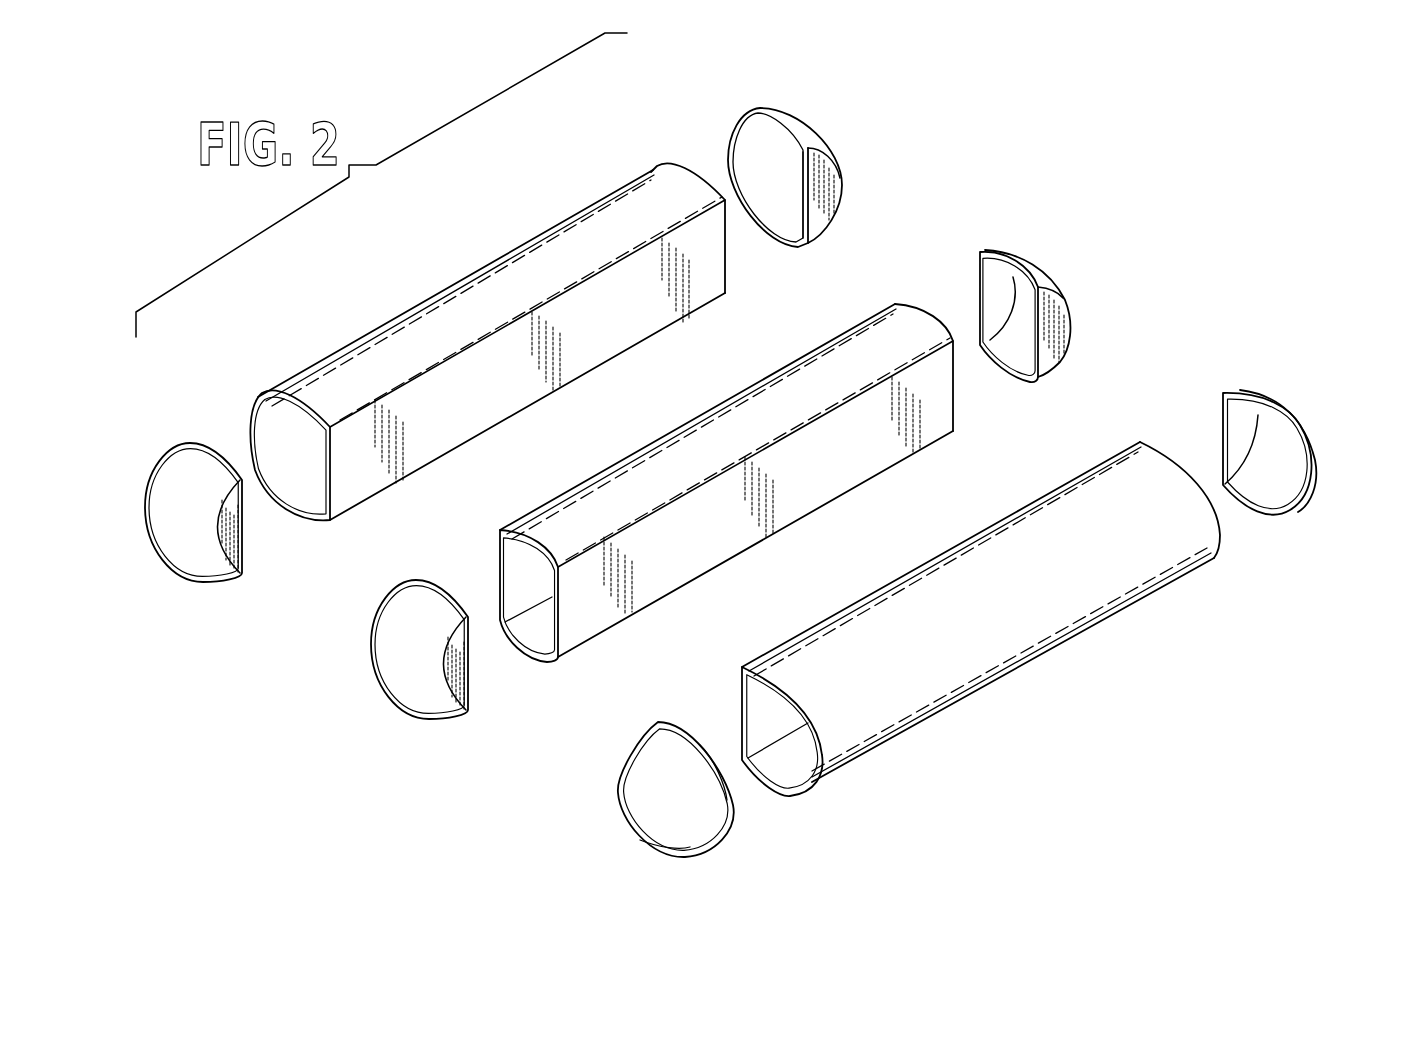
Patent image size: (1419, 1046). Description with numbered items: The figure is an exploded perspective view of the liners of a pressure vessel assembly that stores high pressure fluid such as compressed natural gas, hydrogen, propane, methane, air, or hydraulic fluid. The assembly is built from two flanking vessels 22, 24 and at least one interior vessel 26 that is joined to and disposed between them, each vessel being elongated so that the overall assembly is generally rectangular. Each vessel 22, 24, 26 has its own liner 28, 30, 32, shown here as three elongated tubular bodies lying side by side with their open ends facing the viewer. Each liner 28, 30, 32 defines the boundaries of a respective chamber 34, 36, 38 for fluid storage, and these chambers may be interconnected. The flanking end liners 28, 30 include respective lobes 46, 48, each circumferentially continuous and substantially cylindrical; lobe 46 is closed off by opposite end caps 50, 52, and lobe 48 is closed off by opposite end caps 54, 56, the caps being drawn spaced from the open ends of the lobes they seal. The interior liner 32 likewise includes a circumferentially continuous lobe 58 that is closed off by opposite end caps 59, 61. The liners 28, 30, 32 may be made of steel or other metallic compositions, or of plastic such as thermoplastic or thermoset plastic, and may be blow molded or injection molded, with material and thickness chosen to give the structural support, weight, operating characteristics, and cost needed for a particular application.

The flanking vessel 22 is at (841, 94).
The flanking vessel 24 is at (1325, 385).
The interior vessel 26 is at (1078, 240).
The liner 28 is at (487, 341).
The liner 30 is at (981, 619).
The interior liner 32 is at (726, 483).
The chamber 34 is at (307, 459).
The chamber 36 is at (789, 732).
The chamber 38 is at (544, 591).
The lobe 46 is at (445, 452).
The lobe 48 is at (922, 733).
The end cap 50 is at (218, 577).
The end cap 52 is at (832, 155).
The end cap 54 is at (705, 855).
The end cap 56 is at (1312, 432).
The lobe 58 is at (668, 600).
The end cap 59 is at (445, 715).
The end cap 61 is at (1062, 293).